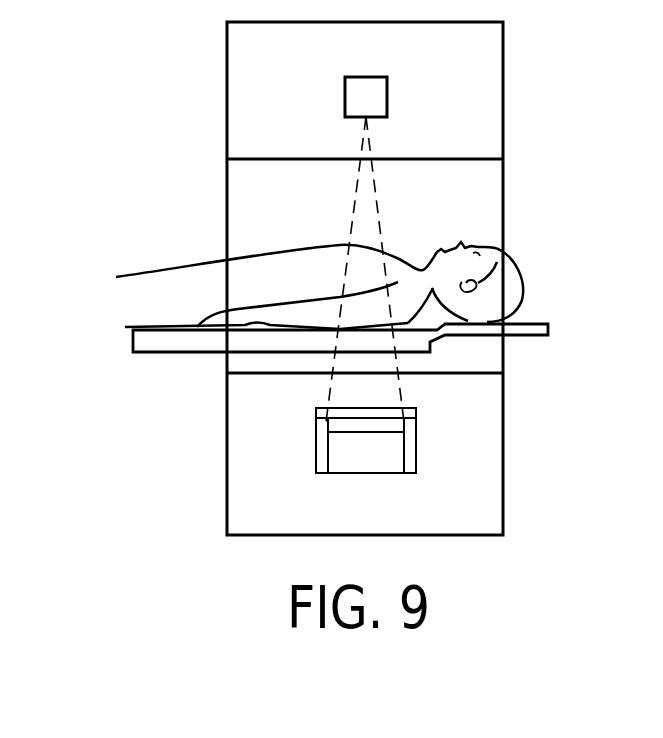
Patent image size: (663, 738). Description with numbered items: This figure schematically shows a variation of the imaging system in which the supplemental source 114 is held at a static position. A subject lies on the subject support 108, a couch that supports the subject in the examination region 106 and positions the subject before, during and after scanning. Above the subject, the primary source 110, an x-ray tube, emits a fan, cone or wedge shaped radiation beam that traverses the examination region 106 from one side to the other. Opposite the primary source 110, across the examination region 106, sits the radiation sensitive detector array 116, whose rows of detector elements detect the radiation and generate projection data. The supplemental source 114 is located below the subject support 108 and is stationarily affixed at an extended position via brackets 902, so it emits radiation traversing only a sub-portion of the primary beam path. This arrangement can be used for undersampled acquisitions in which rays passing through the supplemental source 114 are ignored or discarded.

The examination region 106 is at (452, 217).
The subject support 108 is at (198, 352).
The primary source 110 is at (348, 93).
The supplemental source 114 is at (417, 412).
The radiation sensitive detector array 116 is at (343, 485).
The brackets 902 is at (316, 445).